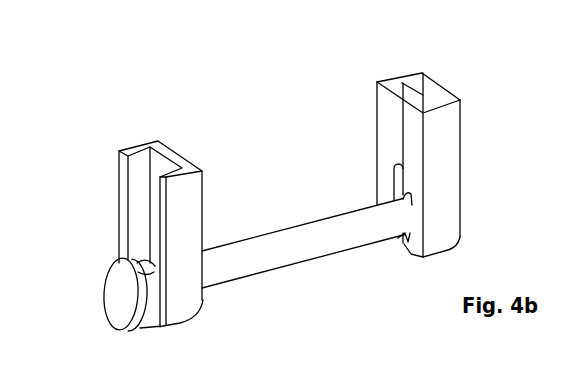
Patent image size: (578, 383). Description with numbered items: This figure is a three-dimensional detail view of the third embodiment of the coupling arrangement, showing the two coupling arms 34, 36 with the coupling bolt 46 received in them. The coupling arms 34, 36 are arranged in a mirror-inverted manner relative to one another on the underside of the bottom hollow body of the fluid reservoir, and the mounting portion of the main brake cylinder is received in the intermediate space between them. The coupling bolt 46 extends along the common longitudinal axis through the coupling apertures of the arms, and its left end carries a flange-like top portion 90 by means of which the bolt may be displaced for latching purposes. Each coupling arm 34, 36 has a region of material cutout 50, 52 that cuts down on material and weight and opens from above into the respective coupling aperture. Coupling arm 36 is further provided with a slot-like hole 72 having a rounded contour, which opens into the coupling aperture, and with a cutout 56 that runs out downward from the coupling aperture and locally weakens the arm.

The material cutout 50 is at (142, 177).
The coupling arm 34 is at (178, 211).
The knob 90 is at (113, 288).
The coupling bolt 46 is at (323, 228).
The coupling arm 36 is at (434, 123).
The material cutout 52 is at (430, 83).
The slot-like hole 72 is at (400, 168).
The cutout 56 is at (397, 259).